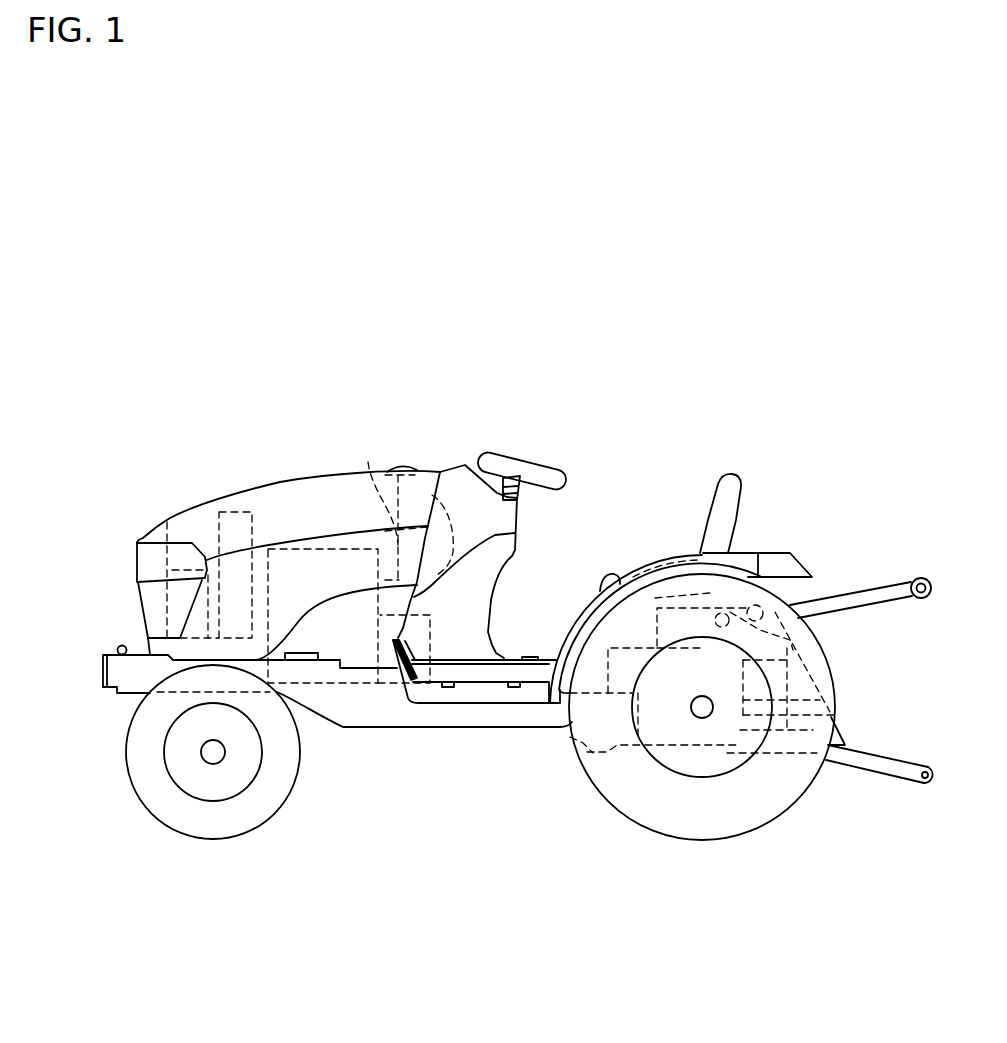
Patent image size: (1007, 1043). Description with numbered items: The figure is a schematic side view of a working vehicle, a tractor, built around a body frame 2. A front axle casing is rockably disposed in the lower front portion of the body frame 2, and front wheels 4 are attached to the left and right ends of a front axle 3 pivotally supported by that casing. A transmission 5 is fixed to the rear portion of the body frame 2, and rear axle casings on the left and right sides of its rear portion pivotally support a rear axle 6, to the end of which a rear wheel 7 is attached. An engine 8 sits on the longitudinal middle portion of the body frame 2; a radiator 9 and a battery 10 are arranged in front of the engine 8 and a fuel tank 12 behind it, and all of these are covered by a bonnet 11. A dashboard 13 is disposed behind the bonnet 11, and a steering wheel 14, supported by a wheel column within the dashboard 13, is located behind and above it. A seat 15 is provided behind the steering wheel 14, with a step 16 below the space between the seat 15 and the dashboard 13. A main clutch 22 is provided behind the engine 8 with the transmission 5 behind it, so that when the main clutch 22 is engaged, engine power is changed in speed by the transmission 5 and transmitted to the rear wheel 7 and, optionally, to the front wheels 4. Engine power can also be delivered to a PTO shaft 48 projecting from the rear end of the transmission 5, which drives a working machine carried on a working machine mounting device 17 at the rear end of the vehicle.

The body frame 2 is at (122, 693).
The front axle 3 is at (205, 762).
The front wheels 4 is at (285, 802).
The transmission 5 is at (720, 753).
The rear axle 6 is at (692, 715).
The rear wheel 7 is at (802, 792).
The engine 8 is at (318, 505).
The radiator 9 is at (232, 488).
The battery 10 is at (170, 572).
The bonnet 11 is at (283, 482).
The fuel tank 12 is at (368, 462).
The dashboard 13 is at (505, 575).
The steering wheel 14 is at (535, 462).
The seat 15 is at (742, 477).
The step 16 is at (468, 705).
The working machine mounting device 17 is at (873, 589).
The main clutch 22 is at (392, 683).
The PTO shaft 48 is at (838, 687).